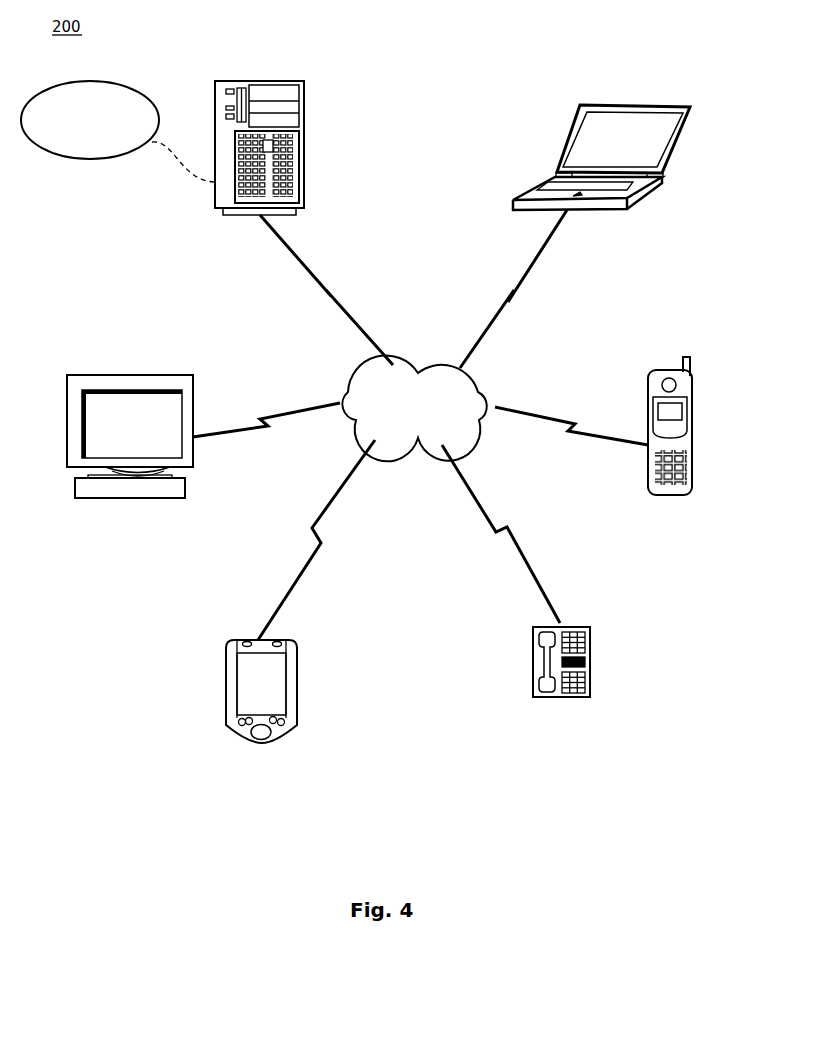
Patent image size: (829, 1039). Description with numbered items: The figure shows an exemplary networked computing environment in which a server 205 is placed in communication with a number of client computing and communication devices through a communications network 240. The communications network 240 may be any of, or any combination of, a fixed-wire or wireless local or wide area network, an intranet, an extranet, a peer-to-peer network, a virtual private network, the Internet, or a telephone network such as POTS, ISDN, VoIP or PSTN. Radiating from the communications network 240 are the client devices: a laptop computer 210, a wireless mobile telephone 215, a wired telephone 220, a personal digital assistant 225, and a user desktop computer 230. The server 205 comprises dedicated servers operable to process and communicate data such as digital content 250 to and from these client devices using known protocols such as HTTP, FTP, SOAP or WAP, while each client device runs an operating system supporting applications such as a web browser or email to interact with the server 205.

The server 205 is at (262, 81).
The laptop computer 210 is at (633, 104).
The wireless mobile telephone 215 is at (665, 372).
The wired telephone 220 is at (590, 627).
The personal digital assistant 225 is at (297, 702).
The user desktop computer 230 is at (127, 498).
The communications network 240 is at (340, 397).
The digital content 250 is at (117, 131).